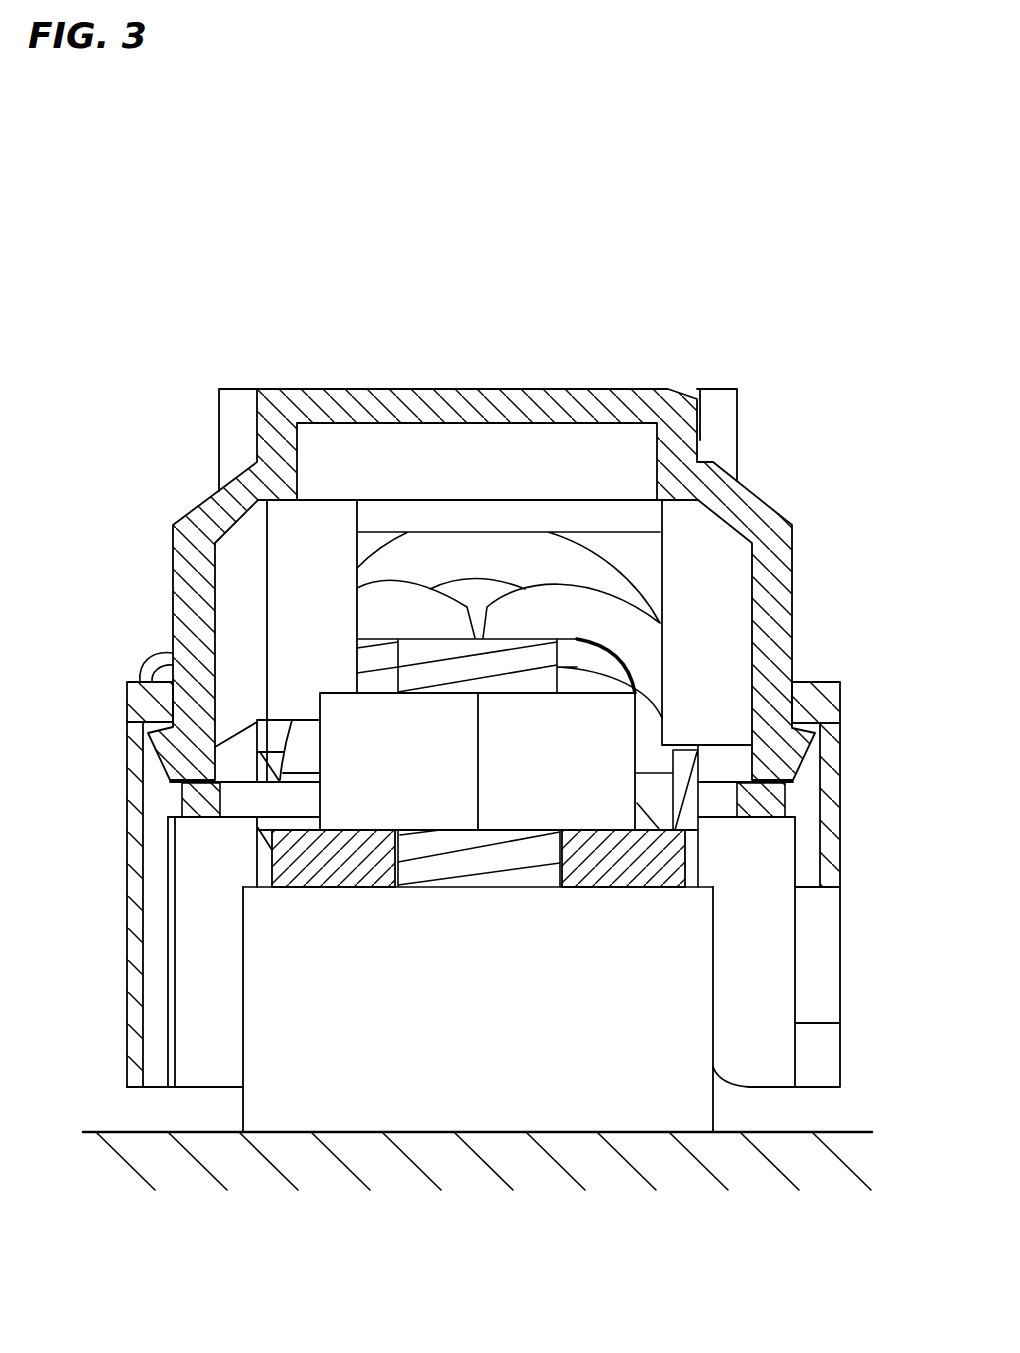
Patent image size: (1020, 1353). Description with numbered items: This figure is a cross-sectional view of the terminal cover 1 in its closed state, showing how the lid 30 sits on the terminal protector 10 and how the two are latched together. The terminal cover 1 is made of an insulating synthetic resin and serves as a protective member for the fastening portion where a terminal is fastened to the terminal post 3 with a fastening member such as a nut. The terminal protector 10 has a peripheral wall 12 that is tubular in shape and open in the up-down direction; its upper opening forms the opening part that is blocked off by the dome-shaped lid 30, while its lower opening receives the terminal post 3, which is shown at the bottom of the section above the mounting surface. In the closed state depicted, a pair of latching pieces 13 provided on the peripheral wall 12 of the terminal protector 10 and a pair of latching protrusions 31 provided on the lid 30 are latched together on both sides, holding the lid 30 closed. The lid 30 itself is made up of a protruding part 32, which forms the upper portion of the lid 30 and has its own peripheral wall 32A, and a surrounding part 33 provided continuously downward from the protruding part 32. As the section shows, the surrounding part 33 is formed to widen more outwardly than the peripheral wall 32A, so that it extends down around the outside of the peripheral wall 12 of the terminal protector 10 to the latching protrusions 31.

The terminal cover 1 is at (460, 244).
The terminal post 3 is at (638, 1100).
The terminal protector 10 is at (135, 933).
The peripheral wall 12 is at (135, 868).
The latching pieces 13 is at (168, 708).
The lid 30 is at (193, 540).
The latching protrusions 31 is at (162, 743).
The protruding part 32 is at (617, 408).
The peripheral wall 32A is at (680, 452).
The surrounding part 33 is at (772, 648).